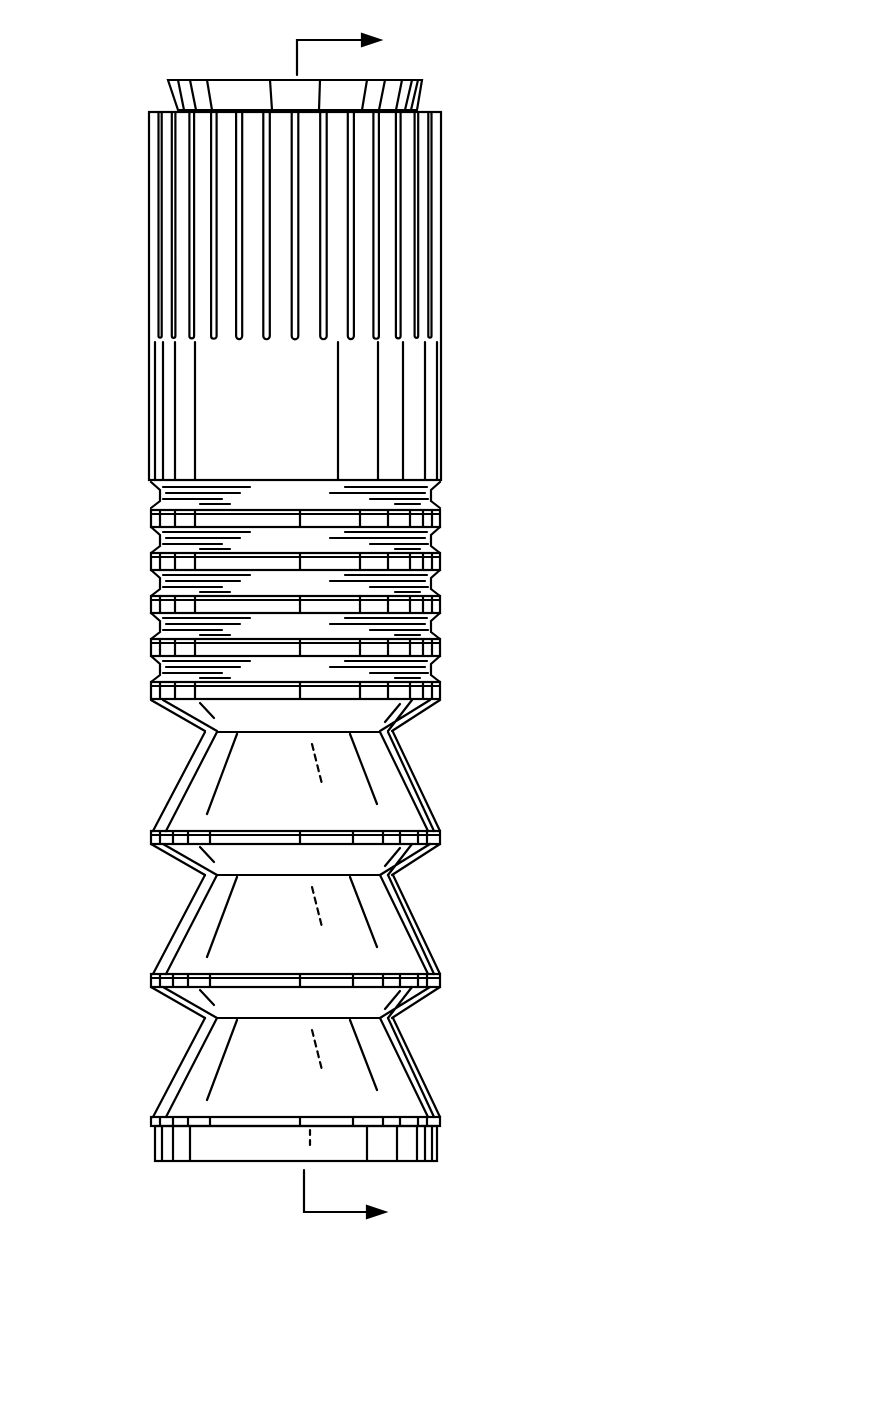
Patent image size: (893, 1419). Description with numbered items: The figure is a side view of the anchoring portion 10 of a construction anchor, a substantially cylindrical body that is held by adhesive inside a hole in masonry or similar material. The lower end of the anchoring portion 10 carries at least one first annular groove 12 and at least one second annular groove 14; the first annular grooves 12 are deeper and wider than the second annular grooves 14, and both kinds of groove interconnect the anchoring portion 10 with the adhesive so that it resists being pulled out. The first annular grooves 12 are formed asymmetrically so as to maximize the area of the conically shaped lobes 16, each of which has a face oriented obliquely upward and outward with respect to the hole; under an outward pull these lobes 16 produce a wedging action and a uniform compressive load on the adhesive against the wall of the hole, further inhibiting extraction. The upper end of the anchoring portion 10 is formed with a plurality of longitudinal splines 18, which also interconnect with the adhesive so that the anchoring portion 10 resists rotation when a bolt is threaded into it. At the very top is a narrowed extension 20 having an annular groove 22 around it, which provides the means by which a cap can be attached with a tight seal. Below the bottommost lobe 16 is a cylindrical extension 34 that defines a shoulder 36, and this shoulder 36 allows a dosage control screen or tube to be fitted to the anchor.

The anchoring portion 10 is at (475, 420).
The first annular groove 12 is at (190, 858).
The second annular groove 14 is at (158, 580).
The conically shaped lobe 16 is at (388, 947).
The longitudinal splines 18 is at (242, 212).
The narrowed extension 20 is at (180, 110).
The annular groove 22 is at (418, 110).
The cylindrical extension 34 is at (440, 1152).
The shoulder 36 is at (440, 1125).